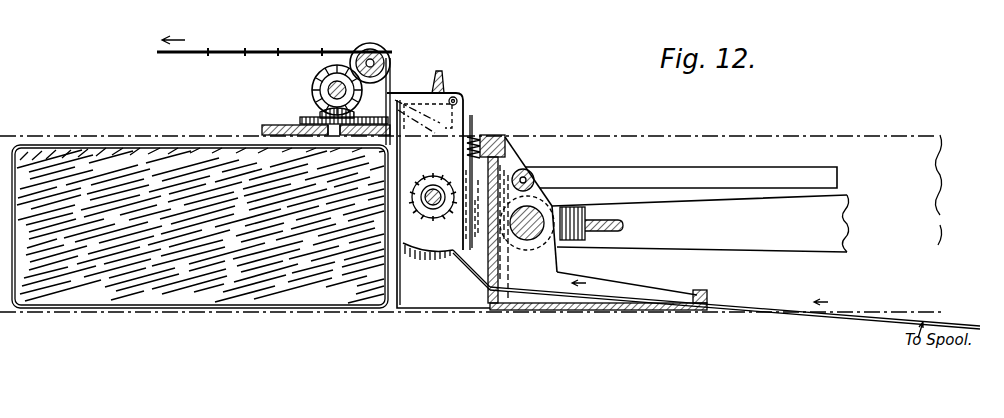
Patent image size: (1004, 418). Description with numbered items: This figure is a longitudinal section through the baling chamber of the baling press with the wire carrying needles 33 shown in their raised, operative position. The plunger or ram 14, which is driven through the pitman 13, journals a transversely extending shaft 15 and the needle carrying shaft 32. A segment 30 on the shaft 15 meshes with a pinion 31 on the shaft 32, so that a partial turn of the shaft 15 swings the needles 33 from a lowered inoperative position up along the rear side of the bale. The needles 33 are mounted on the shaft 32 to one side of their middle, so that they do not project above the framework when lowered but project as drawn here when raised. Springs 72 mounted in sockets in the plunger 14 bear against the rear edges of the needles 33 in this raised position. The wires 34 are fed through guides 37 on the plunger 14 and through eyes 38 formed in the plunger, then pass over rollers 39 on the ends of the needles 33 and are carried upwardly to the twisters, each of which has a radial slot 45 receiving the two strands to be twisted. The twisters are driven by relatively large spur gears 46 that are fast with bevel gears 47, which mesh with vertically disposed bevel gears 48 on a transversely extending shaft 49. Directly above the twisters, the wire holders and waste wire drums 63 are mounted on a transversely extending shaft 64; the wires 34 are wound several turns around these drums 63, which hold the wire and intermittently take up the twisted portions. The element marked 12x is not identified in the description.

The film magazine 12x is at (200, 226).
The pitman 13 is at (791, 246).
The plunger or ram 14 is at (560, 276).
The transversely extending shaft 15 is at (529, 176).
The segment 30 is at (480, 243).
The pinion 31 is at (472, 137).
The needle carrying shaft 32 is at (432, 218).
The needles 33 is at (465, 123).
The wires 34 is at (763, 309).
The guides 37 is at (700, 290).
The eyes 38 is at (497, 306).
The rollers 39 is at (460, 94).
The radial slot 45 is at (399, 118).
The spur gears 46 is at (300, 120).
The bevel gears 47 is at (322, 110).
The bevel gears 48 is at (314, 84).
The transversely extending shaft 49 is at (337, 82).
The wire holders and waste wire drums 63 is at (388, 52).
The transversely extending shaft 64 is at (367, 50).
The springs 72 is at (506, 140).